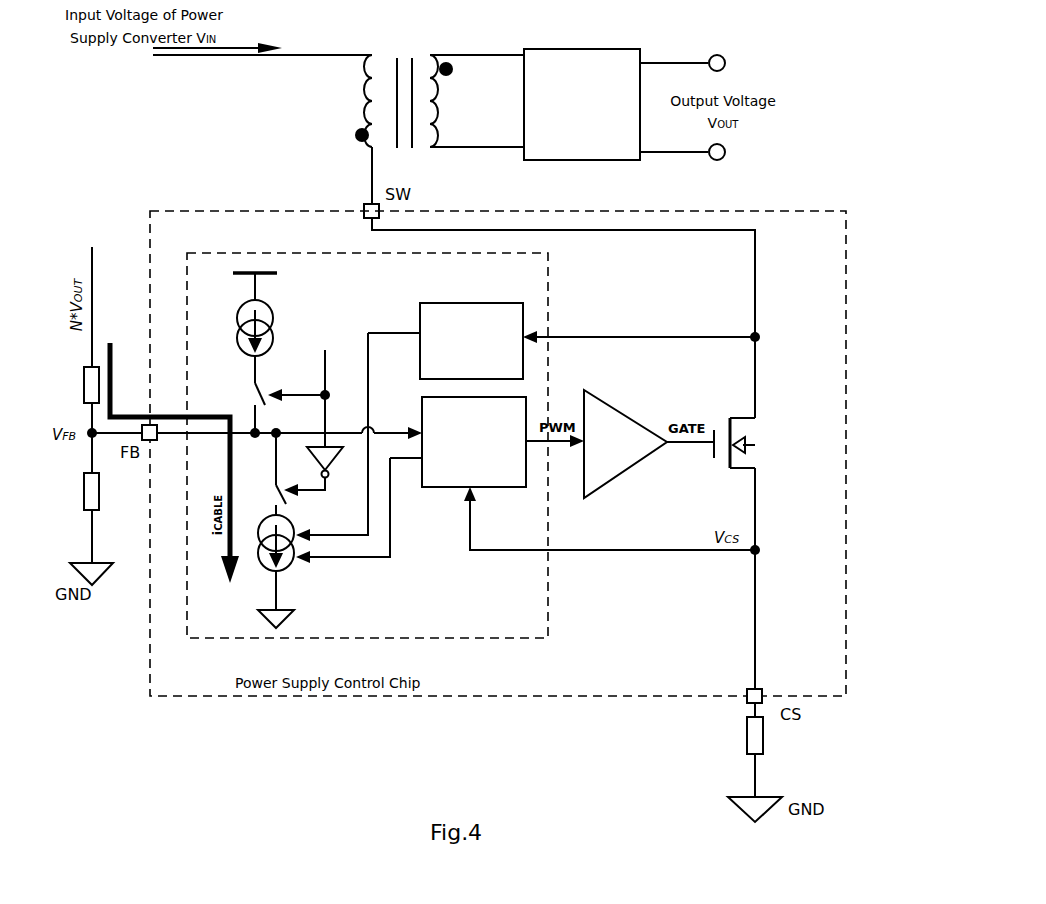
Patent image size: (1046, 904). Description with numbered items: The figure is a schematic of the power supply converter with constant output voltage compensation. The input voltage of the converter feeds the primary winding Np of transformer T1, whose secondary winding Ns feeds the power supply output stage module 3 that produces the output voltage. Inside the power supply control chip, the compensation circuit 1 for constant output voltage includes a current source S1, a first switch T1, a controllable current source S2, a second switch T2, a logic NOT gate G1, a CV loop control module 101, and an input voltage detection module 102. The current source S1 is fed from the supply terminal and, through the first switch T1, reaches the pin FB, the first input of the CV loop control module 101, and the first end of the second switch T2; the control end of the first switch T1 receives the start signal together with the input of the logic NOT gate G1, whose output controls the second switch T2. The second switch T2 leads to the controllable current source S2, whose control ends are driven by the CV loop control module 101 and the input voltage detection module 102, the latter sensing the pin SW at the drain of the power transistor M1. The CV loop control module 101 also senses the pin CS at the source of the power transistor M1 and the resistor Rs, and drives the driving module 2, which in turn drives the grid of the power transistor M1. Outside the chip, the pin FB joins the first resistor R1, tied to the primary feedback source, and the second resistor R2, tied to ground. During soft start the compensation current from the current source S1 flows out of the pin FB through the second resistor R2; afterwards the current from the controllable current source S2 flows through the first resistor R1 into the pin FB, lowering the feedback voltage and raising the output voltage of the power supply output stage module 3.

The compensation circuit for constant output voltage 1 is at (367, 445).
The driving module 2 is at (625, 444).
The power supply output stage module 3 is at (582, 104).
The CV loop control module 101 is at (474, 442).
The input voltage detection module 102 is at (471, 341).
The first switch T1 is at (408, 89).
The primary winding Np is at (355, 101).
The secondary winding Ns is at (454, 101).
The first resistor R1 is at (73, 385).
The second resistor R2 is at (73, 491).
The resistor Rs is at (776, 741).
The power transistor M1 is at (775, 434).
The current source S1 is at (241, 328).
The controllable current source S2 is at (288, 555).
The logic NOT gate G1 is at (337, 464).
The second switch T2 is at (259, 493).